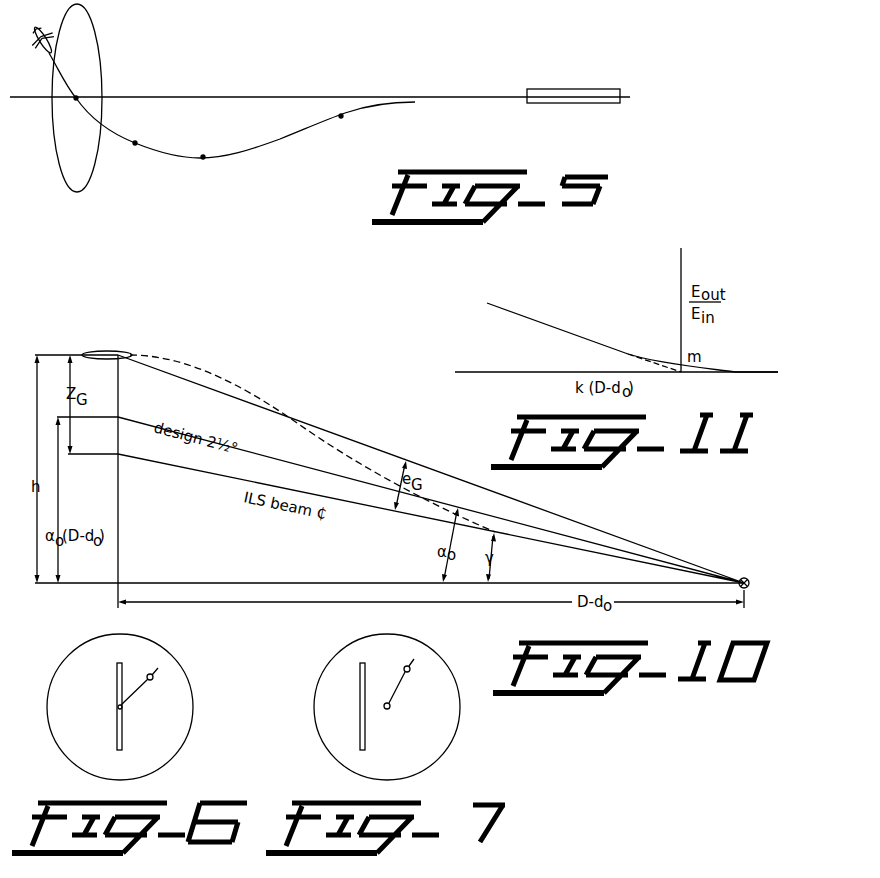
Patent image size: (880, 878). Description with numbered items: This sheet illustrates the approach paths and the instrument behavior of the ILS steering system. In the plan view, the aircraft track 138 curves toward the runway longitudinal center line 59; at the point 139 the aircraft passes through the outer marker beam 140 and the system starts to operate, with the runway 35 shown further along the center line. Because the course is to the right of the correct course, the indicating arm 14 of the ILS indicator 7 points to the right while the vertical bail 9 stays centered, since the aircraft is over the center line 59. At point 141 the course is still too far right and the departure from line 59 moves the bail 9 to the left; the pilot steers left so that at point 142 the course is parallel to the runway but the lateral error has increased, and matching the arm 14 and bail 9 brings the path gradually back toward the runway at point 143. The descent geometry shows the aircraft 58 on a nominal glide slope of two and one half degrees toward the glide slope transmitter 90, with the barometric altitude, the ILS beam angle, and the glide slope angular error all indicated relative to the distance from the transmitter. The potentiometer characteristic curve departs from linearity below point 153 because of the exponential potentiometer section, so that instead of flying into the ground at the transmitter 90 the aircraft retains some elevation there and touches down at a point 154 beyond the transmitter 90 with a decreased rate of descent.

In FIG. 5, the aircraft track 138 is at (42, 25).
In FIG. 5, the point 139 is at (80, 96).
In FIG. 5, the runway longitudinal center line 59 is at (204, 97).
In FIG. 5, the outer marker beam 140 is at (90, 182).
In FIG. 5, the point 141 is at (137, 142).
In FIG. 5, the point 142 is at (204, 158).
In FIG. 5, the point 143 is at (342, 117).
In FIG. 5, the runway 35 is at (530, 90).
In FIG. 10, the aircraft 58 is at (122, 353).
In FIG. 10, the glide slope transmitter 90 is at (746, 577).
In FIG. 11, the glide slope transmitter 90 is at (683, 373).
In FIG. 11, the point 153 is at (600, 346).
In FIG. 11, the touchdown point 154 is at (770, 371).
In FIG. 6, the ILS instrument 7 is at (192, 735).
In FIG. 7, the ILS instrument 7 is at (458, 733).
In FIG. 6, the vertical bail 9 is at (122, 748).
In FIG. 7, the vertical bail 9 is at (365, 748).
In FIG. 6, the needle 14 is at (140, 687).
In FIG. 7, the needle 14 is at (399, 684).